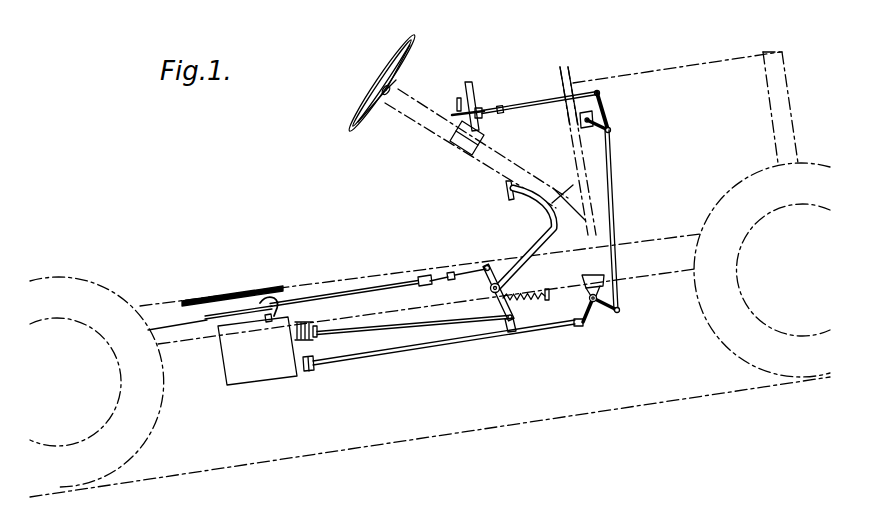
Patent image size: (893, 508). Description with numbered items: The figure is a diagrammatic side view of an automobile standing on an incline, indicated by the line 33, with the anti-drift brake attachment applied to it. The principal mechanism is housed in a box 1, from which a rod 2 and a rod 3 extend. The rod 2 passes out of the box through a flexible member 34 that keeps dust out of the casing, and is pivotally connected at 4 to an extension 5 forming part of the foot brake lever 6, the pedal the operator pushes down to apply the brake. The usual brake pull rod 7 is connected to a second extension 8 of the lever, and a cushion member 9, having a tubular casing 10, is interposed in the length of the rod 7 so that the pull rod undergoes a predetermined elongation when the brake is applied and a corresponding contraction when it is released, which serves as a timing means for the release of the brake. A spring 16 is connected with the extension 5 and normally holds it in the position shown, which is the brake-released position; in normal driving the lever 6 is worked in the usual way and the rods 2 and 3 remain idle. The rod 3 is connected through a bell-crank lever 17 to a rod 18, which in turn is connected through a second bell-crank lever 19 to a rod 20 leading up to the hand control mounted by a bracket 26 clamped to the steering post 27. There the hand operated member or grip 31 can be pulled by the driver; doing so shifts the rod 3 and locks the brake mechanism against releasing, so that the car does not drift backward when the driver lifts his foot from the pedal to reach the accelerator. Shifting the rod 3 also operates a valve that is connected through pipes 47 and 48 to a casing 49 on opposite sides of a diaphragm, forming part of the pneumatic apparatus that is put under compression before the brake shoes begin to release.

The box 1 is at (265, 378).
The rod 2 is at (380, 330).
The rod 3 is at (433, 349).
The pivotal connection 4 is at (507, 327).
The extension 5 is at (492, 303).
The foot brake lever 6 is at (527, 265).
The brake pull rod 7 is at (333, 297).
The extension 8 is at (488, 266).
The cushion member 9 is at (433, 276).
The tubular casing 10 is at (472, 272).
The spring 16 is at (533, 303).
The bell-crank lever 17 is at (590, 317).
The rod 18 is at (614, 187).
The bell-crank lever 19 is at (603, 120).
The rod 20 is at (542, 105).
The bracket 26 is at (472, 87).
The steering post 27 is at (421, 115).
The hand operated member 31 is at (457, 102).
The incline line 33 is at (570, 415).
The flexible member 34 is at (308, 322).
The pipe 47 is at (270, 320).
The pipe 48 is at (277, 293).
The casing 49 is at (230, 303).